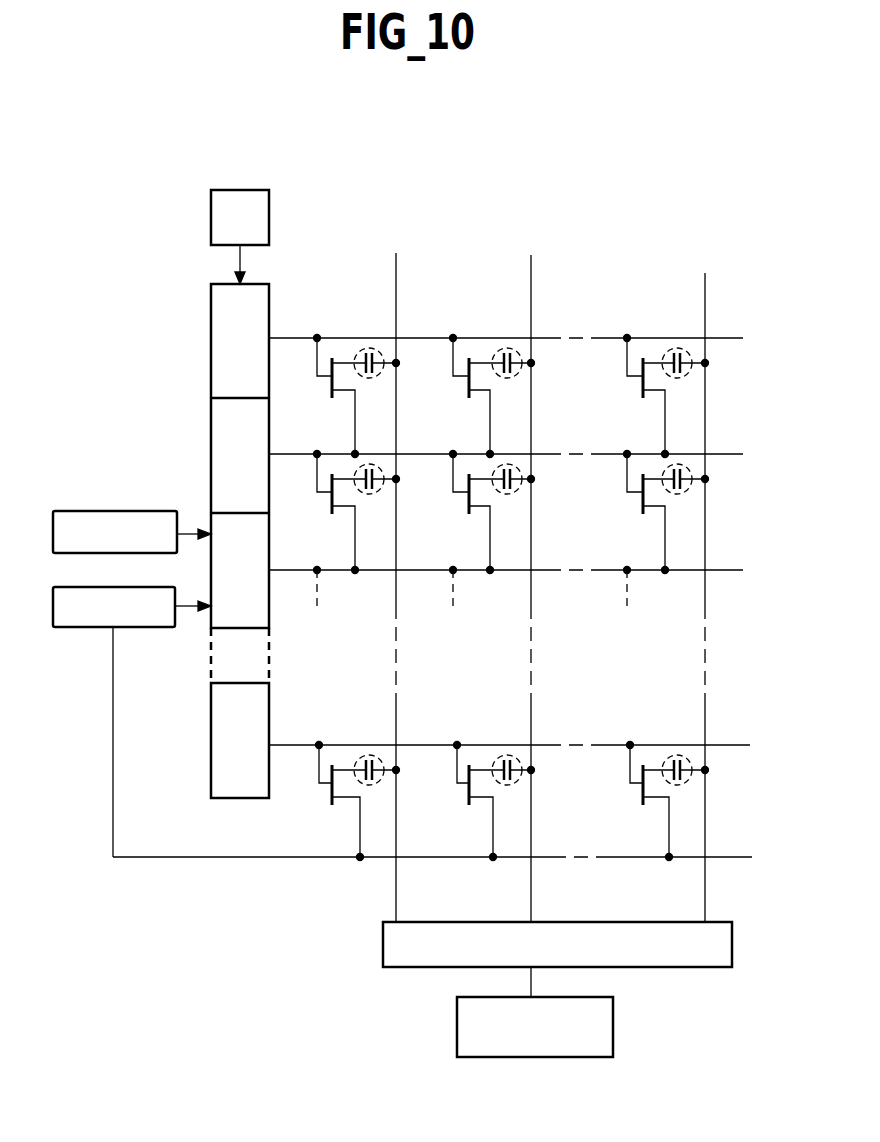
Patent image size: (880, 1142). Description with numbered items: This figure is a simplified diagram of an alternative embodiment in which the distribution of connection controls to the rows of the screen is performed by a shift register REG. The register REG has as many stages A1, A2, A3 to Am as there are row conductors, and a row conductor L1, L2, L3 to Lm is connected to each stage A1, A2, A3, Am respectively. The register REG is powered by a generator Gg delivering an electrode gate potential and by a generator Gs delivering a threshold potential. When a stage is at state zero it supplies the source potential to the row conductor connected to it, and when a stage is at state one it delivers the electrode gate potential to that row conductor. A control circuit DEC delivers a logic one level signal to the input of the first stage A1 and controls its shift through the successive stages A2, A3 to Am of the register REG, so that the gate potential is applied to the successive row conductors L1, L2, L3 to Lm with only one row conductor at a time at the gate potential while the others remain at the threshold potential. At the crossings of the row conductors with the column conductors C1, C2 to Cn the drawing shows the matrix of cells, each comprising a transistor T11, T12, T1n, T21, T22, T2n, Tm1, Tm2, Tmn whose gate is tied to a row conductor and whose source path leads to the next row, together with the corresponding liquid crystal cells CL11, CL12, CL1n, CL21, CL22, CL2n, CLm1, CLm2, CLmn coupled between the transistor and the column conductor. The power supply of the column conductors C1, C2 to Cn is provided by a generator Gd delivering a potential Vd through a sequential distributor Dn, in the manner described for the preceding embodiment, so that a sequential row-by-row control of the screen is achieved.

The control circuit DEC is at (236, 190).
The shift register REG is at (211, 328).
The first stage of the shift register A1 is at (239, 341).
The second stage of the shift register A2 is at (239, 454).
The third stage of the shift register A3 is at (239, 570).
The last stage of the shift register Am is at (240, 745).
The generator Gg is at (115, 511).
The generator Gs is at (128, 627).
The column conductor C1 is at (396, 280).
The column conductor C2 is at (531, 280).
The column conductor Cn is at (705, 295).
The row conductor L1 is at (718, 338).
The row conductor L2 is at (716, 454).
The row conductor L3 is at (718, 570).
The row conductor Lm is at (718, 745).
The transistor row 1 column 1 T11 is at (332, 380).
The transistor row 1 column 2 T12 is at (469, 380).
The transistor row 1 column n T1n is at (643, 392).
The transistor row 2 column 1 T21 is at (332, 500).
The transistor row 2 column 2 T22 is at (469, 500).
The transistor row 2 column n T2n is at (643, 508).
The transistor row m column 1 Tm1 is at (332, 793).
The transistor row m column 2 Tm2 is at (469, 793).
The transistor row m column n Tmn is at (643, 795).
The liquid crystal cell row 1 column 1 CL11 is at (369, 348).
The liquid crystal cell row 1 column 2 CL12 is at (503, 348).
The liquid crystal cell row 1 column n CL1n is at (688, 372).
The liquid crystal cell row 2 column 1 CL21 is at (366, 479).
The liquid crystal cell row 2 column 2 CL22 is at (520, 476).
The liquid crystal cell row 2 column n CL2n is at (688, 488).
The liquid crystal cell row m column 1 CLm1 is at (368, 755).
The liquid crystal cell row m column 2 CLm2 is at (506, 755).
The liquid crystal cell row m column n CLmn is at (675, 755).
The sequential circuit Dn is at (383, 940).
The generator Gd is at (613, 1032).
The drain voltage Vd is at (531, 1046).